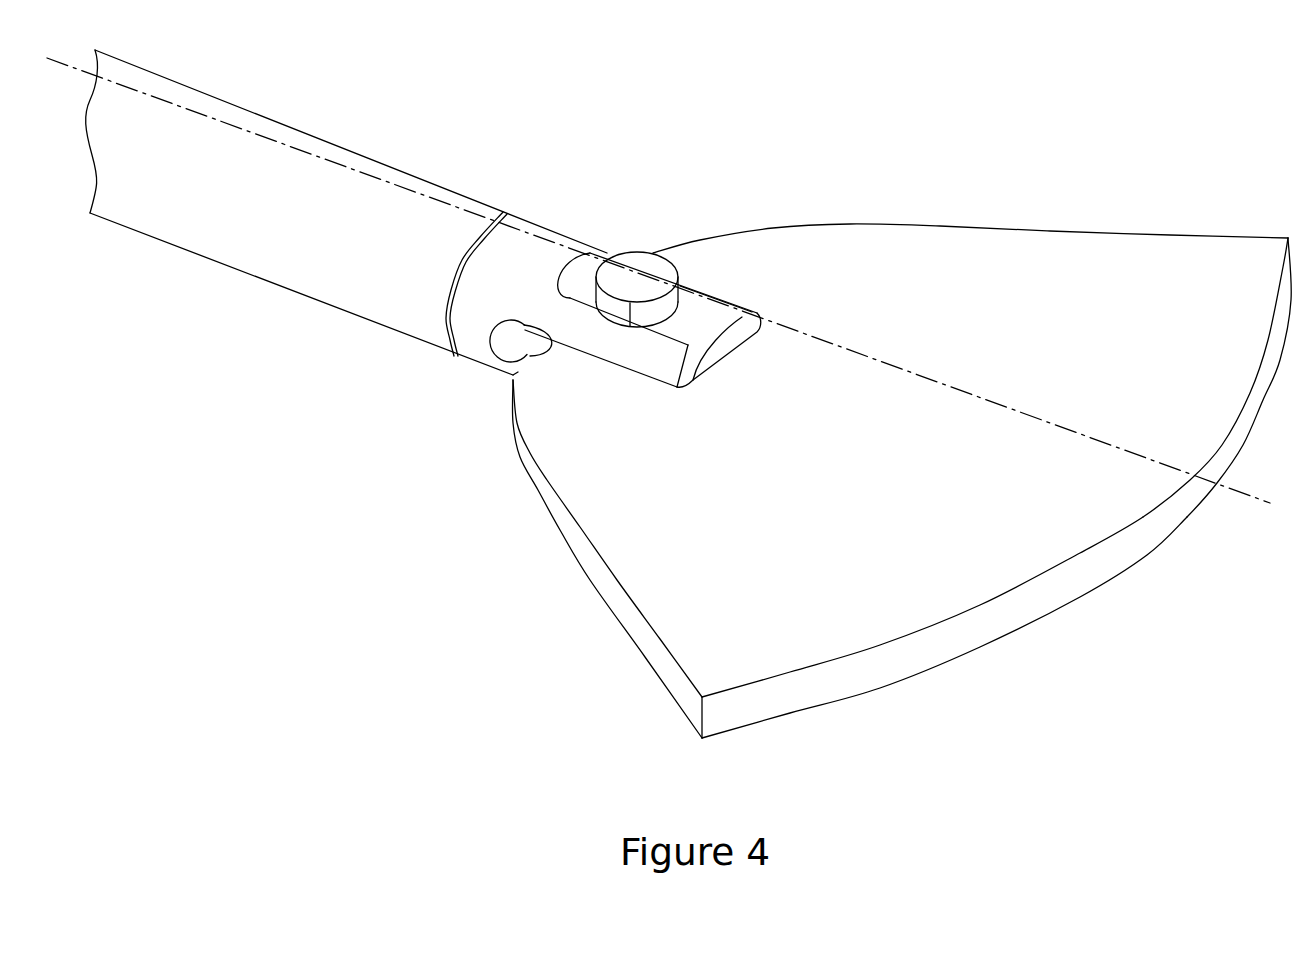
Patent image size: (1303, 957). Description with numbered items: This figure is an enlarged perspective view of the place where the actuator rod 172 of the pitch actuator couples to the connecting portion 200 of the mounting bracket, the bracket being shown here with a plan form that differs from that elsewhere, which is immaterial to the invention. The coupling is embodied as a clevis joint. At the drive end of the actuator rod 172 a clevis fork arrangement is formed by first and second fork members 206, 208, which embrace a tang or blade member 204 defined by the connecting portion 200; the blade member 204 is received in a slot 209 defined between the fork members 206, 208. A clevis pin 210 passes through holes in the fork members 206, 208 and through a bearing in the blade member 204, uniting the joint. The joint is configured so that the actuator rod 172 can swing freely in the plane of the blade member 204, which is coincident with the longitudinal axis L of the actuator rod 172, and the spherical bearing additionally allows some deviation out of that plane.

The actuator rod 172 is at (322, 285).
The connecting portion 200 is at (1080, 280).
The blade member 204 is at (597, 502).
The first fork member 206 is at (730, 295).
The second fork member 208 is at (510, 378).
The slot 209 is at (513, 378).
The clevis pin 210 is at (656, 256).
The longitudinal axis L is at (1243, 493).